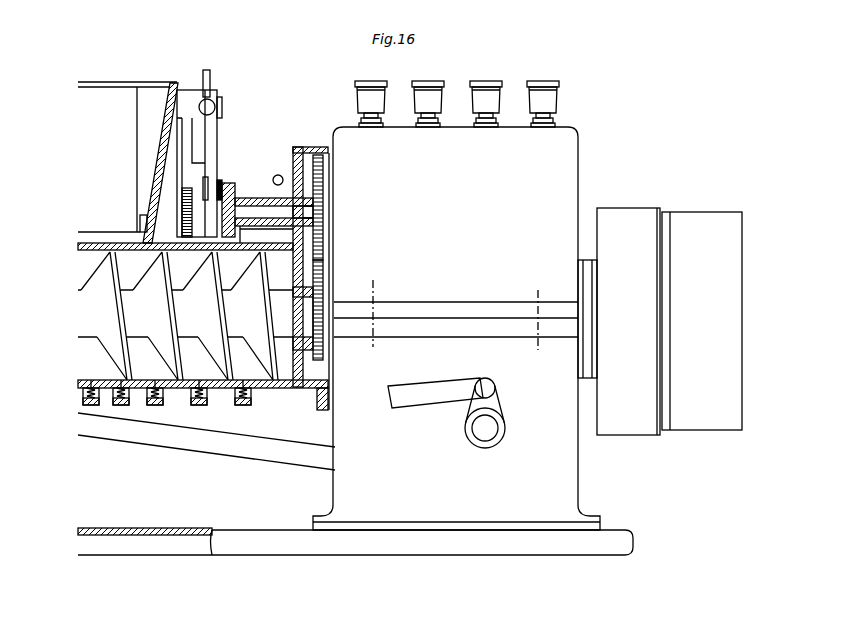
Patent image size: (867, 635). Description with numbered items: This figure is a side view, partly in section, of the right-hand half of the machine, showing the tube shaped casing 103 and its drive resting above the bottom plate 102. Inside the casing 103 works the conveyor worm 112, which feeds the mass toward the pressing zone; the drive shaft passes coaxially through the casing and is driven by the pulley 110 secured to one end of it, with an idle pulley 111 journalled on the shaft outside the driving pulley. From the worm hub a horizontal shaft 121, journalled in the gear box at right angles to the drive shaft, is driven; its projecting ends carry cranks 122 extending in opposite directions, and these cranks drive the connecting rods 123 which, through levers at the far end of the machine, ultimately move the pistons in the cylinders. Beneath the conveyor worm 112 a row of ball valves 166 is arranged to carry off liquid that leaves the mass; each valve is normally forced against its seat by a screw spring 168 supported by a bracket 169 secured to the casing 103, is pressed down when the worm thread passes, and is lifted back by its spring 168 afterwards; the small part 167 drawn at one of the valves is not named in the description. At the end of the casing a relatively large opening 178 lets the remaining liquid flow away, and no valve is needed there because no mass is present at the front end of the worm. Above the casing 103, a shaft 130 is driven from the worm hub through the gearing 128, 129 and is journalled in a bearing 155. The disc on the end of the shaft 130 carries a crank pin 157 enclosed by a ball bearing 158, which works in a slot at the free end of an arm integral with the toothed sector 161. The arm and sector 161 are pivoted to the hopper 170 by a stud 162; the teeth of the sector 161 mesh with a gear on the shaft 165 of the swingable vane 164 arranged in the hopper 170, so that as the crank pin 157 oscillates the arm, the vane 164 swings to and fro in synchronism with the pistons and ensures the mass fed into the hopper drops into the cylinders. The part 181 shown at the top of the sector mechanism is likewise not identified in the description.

The bottom plate 102 is at (278, 530).
The tube shaped casing 103 is at (243, 215).
The pulley 110 is at (628, 321).
The idle pulley 111 is at (702, 321).
The conveyor worm 112 is at (293, 254).
The horizontal shaft 121 is at (472, 428).
The crank 122 is at (503, 438).
The connecting rod 123 is at (289, 441).
The gearing 128 is at (320, 348).
The gearing 129 is at (318, 180).
The shaft 130 is at (295, 212).
The bearing 155 is at (261, 200).
The crank pin 157 is at (232, 205).
The ball bearing 158 is at (221, 188).
The toothed sector 161 is at (185, 149).
The stud 162 is at (221, 100).
The swingable vane 164 is at (127, 157).
The shaft 165 is at (138, 222).
The ball valve 166 is at (266, 378).
The bolt 167 is at (118, 385).
The screw spring 168 is at (125, 393).
The bracket 169 is at (119, 406).
The hopper 170 is at (155, 90).
The opening 178 is at (280, 392).
The actuating rod 181 is at (207, 70).